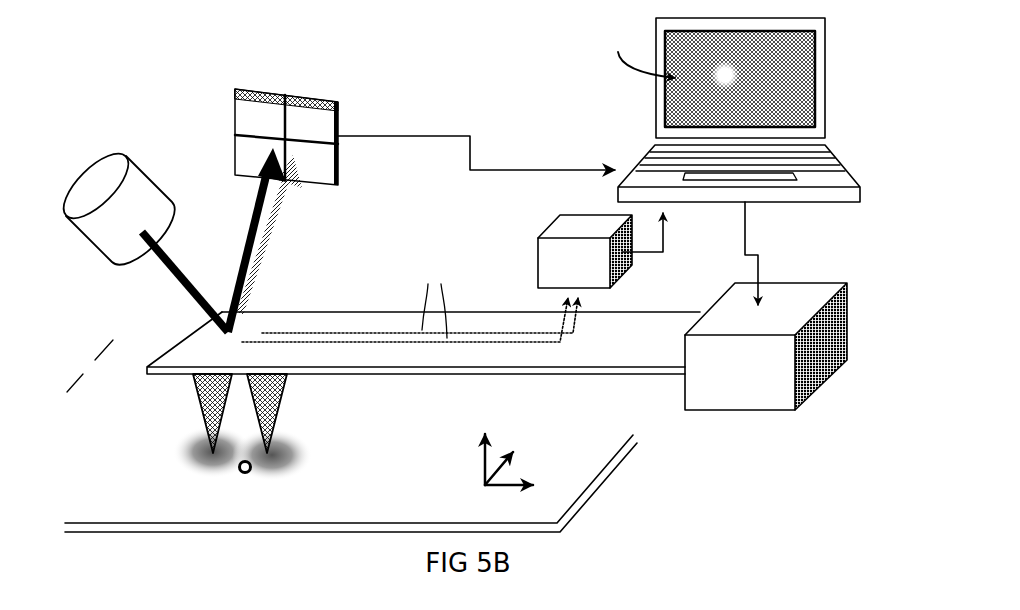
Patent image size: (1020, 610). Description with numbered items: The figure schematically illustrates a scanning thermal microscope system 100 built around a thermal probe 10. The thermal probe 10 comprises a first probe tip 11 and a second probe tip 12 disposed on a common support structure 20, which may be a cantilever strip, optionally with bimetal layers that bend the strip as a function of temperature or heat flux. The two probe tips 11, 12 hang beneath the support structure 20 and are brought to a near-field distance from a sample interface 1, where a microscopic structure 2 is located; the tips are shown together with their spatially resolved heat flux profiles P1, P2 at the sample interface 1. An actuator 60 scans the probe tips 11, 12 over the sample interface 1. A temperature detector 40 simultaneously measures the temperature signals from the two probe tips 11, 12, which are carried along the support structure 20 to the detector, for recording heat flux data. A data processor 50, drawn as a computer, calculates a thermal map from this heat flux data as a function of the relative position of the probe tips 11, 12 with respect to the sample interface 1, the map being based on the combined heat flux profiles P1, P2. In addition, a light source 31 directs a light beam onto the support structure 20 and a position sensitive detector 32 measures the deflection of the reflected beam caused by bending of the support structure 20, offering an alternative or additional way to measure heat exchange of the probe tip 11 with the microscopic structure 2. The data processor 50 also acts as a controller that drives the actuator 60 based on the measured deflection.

The scanning thermal microscope system 100 is at (147, 70).
The light source 31 is at (158, 176).
The position sensitive detector 32 is at (346, 122).
The thermal probe 10 is at (331, 286).
The sample interface 1 is at (97, 440).
The first probe tip 11 is at (200, 408).
The second probe tip 12 is at (291, 412).
The microscopic structure 2 is at (238, 479).
The support structure 20 is at (410, 384).
The temperature detector 40 is at (497, 236).
The data processor 50 is at (640, 102).
The actuator 60 is at (729, 378).
The heat flux profile of first probe tip P1 is at (175, 474).
The heat flux profile of second probe tip P2 is at (302, 475).